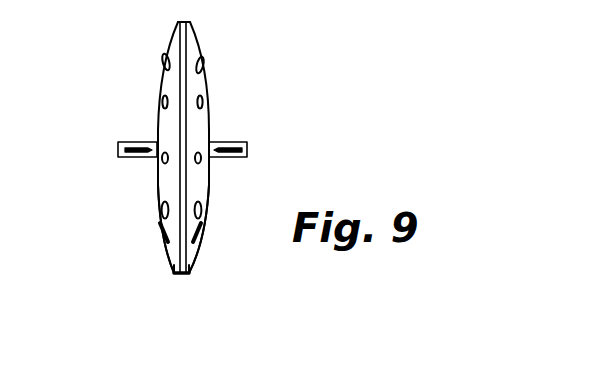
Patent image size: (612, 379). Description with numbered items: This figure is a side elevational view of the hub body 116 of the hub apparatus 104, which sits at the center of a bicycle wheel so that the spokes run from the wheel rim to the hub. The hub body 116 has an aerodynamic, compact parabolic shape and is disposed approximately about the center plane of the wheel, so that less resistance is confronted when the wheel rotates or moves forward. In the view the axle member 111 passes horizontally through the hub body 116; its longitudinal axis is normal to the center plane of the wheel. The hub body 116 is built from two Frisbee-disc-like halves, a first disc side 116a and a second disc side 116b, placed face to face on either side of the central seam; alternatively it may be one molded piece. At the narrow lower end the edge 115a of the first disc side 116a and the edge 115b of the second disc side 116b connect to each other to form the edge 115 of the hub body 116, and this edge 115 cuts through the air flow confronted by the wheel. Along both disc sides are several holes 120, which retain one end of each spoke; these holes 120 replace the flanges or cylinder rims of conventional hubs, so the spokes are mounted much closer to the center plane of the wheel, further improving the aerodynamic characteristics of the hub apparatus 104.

The hub apparatus 104 is at (194, 33).
The holes 120 is at (205, 68).
The hub body 116 is at (198, 125).
The axle member 111 is at (247, 150).
The first disc side 116a is at (165, 182).
The second disc side 116b is at (202, 187).
The edge 115 is at (183, 277).
The edge of the first disc side 115a is at (177, 277).
The edge of the second disc side 115b is at (188, 273).